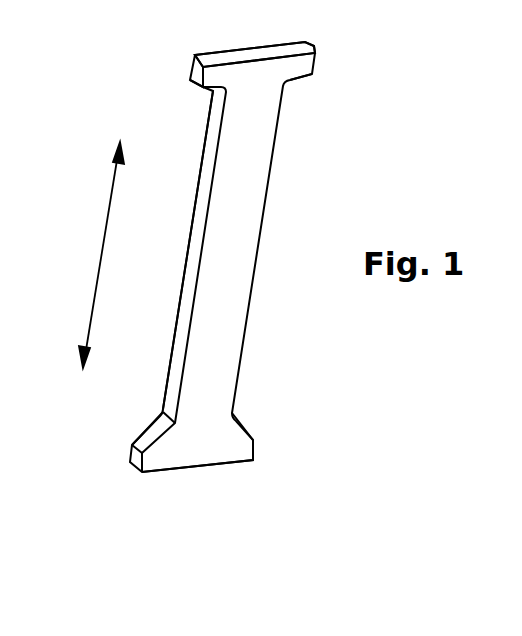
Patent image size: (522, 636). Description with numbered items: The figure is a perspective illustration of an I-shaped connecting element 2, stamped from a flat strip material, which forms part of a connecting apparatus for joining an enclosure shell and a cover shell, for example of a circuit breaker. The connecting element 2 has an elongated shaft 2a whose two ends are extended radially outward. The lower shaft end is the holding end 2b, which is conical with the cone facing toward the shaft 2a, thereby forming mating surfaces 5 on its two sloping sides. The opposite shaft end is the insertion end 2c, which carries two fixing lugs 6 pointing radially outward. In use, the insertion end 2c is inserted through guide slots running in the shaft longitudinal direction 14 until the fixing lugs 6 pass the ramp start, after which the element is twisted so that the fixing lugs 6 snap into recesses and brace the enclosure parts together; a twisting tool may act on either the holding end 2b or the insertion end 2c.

The connecting element 2 is at (268, 196).
The shaft 2a is at (225, 298).
The holding end 2b is at (197, 448).
The insertion end 2c is at (250, 53).
The mating surfaces 5 is at (152, 432).
The fixing lugs 6 is at (208, 90).
The shaft longitudinal direction 14 is at (102, 247).